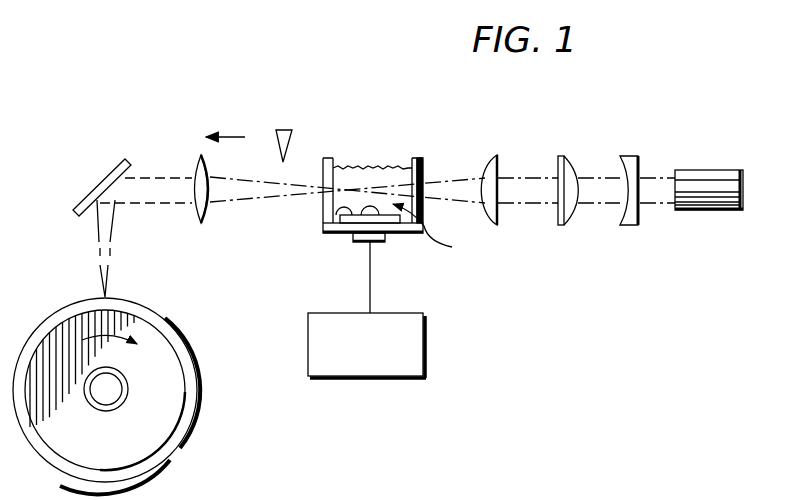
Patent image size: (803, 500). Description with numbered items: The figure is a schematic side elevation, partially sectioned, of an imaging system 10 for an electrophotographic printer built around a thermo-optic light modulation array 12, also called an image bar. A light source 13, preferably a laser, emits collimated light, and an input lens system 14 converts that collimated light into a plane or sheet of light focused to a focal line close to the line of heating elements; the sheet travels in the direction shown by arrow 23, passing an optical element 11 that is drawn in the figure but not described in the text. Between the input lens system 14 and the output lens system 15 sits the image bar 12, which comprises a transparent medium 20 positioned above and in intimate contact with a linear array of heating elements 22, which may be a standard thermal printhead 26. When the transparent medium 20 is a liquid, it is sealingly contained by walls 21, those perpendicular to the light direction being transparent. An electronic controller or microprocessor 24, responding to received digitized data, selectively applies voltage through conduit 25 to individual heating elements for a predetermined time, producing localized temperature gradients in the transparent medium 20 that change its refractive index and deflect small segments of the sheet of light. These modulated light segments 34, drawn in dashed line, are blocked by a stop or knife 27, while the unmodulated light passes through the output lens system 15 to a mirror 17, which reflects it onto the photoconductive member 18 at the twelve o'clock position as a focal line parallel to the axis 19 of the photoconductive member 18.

The imaging system 10 is at (151, 142).
The lens 11 is at (590, 176).
The thermo-optic light modulation array 12 is at (377, 178).
The light source 13 is at (712, 172).
The input lens system 14 is at (599, 225).
The output lens system 15 is at (193, 212).
The mirror 17 is at (95, 190).
The photoconductive member 18 is at (106, 381).
The axis 19 is at (126, 384).
The transparent medium 20 is at (384, 166).
The walls 21 is at (330, 157).
The linear array of heating elements 22 is at (480, 263).
The arrow 23 is at (232, 137).
The electronic controller or microprocessor 24 is at (315, 313).
The conduit 25 is at (373, 302).
The thermal printhead 26 is at (338, 212).
The stop or knife 27 is at (287, 130).
The modulated light segments 34 is at (308, 158).